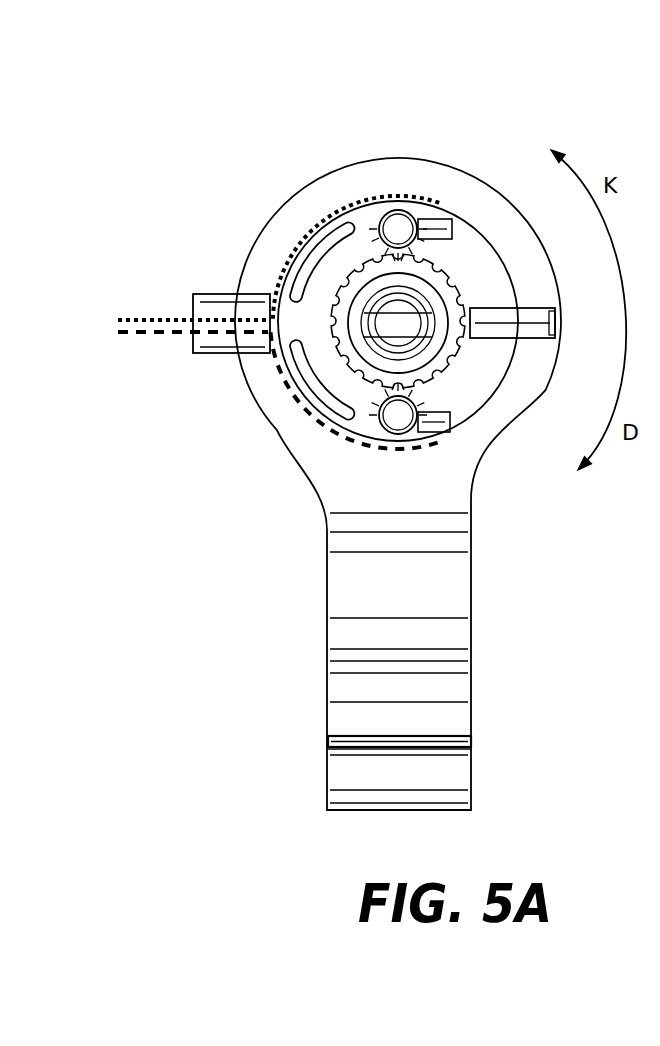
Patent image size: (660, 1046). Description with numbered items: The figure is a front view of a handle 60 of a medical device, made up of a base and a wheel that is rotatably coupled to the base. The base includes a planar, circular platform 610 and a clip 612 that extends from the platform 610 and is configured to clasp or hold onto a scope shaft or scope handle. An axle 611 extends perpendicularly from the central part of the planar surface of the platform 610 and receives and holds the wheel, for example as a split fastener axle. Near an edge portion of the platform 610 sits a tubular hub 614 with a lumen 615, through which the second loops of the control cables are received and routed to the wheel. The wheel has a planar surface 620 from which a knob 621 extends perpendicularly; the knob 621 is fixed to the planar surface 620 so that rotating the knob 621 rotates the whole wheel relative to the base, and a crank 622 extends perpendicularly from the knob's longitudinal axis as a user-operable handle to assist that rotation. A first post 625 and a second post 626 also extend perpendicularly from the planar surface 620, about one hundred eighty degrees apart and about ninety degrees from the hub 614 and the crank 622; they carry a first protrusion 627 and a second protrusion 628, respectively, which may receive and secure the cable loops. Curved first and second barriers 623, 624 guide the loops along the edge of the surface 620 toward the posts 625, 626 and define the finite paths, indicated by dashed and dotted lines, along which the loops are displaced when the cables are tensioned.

The handle 60 is at (476, 72).
The platform 610 is at (523, 243).
The axle 611 is at (410, 325).
The clip 612 is at (453, 637).
The hub 614 is at (205, 297).
The lumen 615 is at (195, 312).
The planar surface 620 is at (348, 425).
The knob 621 is at (458, 352).
The crank 622 is at (535, 333).
The first barrier 623 is at (333, 240).
The second barrier 624 is at (315, 388).
The first post 625 is at (397, 225).
The second post 626 is at (398, 423).
The first protrusion 627 is at (446, 215).
The second protrusion 628 is at (440, 430).